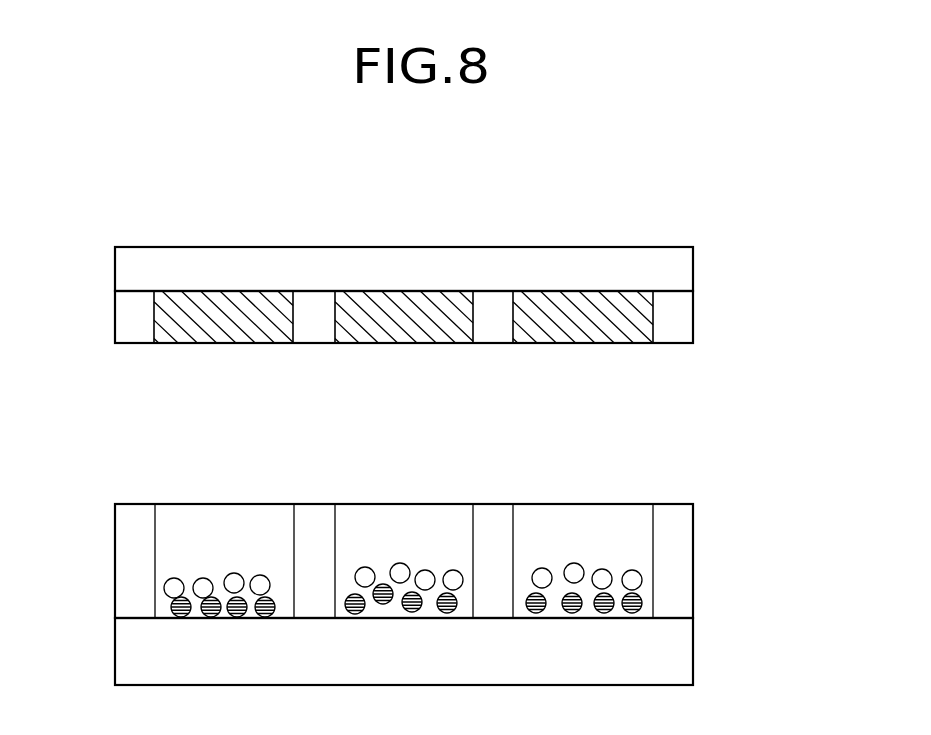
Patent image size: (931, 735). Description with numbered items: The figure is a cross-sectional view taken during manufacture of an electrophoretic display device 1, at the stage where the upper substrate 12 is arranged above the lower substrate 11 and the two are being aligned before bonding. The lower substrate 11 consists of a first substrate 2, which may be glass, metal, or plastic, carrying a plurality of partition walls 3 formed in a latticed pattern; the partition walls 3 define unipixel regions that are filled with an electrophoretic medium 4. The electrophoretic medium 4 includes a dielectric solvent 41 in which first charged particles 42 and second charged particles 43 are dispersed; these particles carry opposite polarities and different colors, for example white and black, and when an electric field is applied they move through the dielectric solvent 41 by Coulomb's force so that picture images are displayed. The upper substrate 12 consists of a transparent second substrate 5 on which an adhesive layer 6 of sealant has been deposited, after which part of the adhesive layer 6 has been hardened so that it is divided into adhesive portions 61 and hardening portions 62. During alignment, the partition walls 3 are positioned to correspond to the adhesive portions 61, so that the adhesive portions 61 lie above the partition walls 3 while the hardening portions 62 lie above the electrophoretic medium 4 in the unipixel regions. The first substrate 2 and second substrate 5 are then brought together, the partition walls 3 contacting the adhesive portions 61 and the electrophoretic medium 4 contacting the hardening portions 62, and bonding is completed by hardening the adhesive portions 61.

The electrophoretic display device 1 is at (735, 138).
The upper substrate 12 is at (93, 229).
The lower substrate 11 is at (86, 488).
The second substrate 5 is at (693, 273).
The adhesive layer 6 is at (777, 312).
The adhesive portions 61 is at (683, 317).
The hardening portions 62 is at (617, 335).
The first substrate 2 is at (125, 643).
The partition walls 3 is at (125, 583).
The electrophoretic medium 4 is at (740, 488).
The dielectric solvent 41 is at (630, 517).
The first charged particles 42 is at (633, 579).
The second charged particles 43 is at (645, 600).